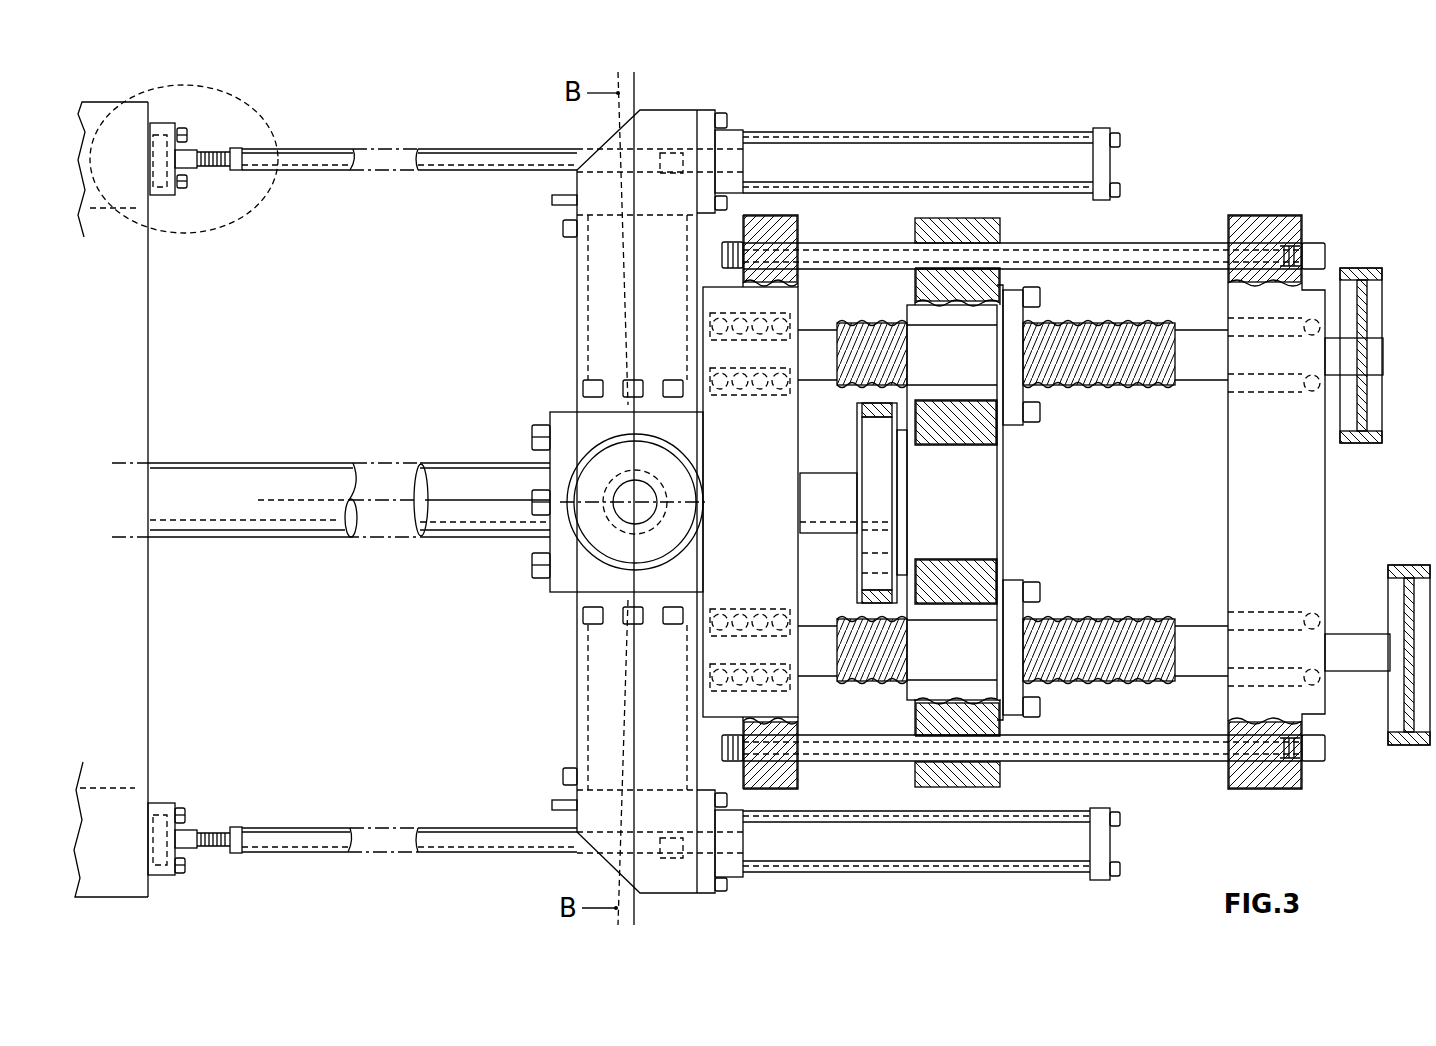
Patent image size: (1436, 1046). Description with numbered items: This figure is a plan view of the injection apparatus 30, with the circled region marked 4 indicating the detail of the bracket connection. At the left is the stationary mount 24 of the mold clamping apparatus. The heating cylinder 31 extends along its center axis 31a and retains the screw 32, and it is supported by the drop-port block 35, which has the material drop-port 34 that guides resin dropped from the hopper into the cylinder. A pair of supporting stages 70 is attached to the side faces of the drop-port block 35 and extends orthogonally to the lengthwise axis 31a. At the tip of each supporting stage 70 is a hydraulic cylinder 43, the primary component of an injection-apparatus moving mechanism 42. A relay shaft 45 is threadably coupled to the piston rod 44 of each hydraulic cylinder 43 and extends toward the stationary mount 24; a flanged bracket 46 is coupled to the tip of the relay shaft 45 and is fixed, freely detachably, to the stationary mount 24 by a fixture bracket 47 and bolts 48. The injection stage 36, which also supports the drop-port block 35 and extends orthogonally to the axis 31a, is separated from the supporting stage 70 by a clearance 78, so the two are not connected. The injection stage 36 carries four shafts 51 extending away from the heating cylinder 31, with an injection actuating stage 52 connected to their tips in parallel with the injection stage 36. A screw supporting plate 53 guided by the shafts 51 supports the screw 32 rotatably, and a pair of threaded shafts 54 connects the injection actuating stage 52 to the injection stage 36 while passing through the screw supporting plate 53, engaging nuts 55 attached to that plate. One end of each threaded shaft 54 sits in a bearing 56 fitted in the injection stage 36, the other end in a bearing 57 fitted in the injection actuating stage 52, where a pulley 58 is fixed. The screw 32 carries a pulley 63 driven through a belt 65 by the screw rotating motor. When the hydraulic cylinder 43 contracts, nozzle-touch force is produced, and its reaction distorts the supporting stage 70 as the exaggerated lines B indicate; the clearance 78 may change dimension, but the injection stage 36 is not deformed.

The detail region of FIG. 4 is at (219, 222).
The stationary mount 24 is at (122, 652).
The injection apparatus 30 is at (1238, 113).
The heating cylinder 31 is at (252, 478).
The center axis 31a is at (377, 503).
The screw 32 is at (827, 513).
The material drop-port 34 is at (623, 512).
The drop-port block 35 is at (585, 575).
The injection stage 36 is at (802, 231).
The injection-apparatus moving mechanism 42 is at (487, 127).
The hydraulic cylinder 43 is at (902, 160).
The piston rod 44 is at (730, 150).
The relay shaft 45 is at (310, 172).
The flanged bracket 46 is at (192, 152).
The fixture bracket 47 is at (165, 124).
The bolts 48 is at (188, 183).
The shafts 51 is at (1128, 250).
The injection actuating stage 52 is at (1263, 227).
The screw supporting plate 53 is at (1000, 228).
The threaded shafts 54 is at (1097, 387).
The nuts 55 is at (955, 410).
The bearings 56 is at (772, 397).
The bearings 57 is at (1314, 393).
The pulleys 58 is at (1380, 304).
The pulley 63 is at (877, 440).
The belt 65 is at (873, 602).
The supporting stage 70 is at (608, 303).
The clearance 78 is at (707, 282).